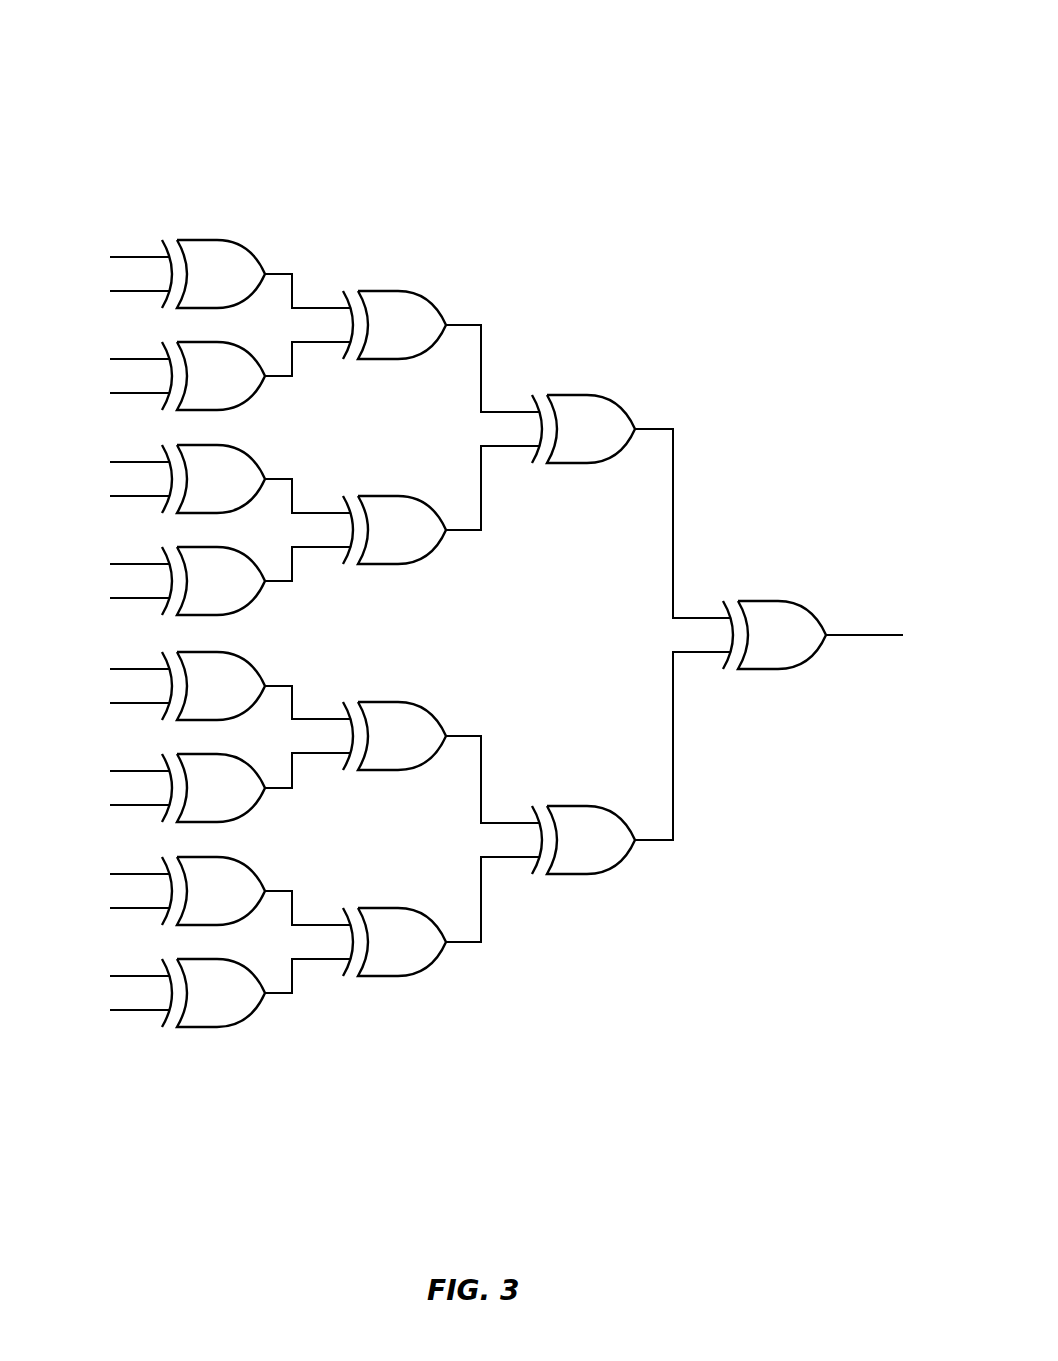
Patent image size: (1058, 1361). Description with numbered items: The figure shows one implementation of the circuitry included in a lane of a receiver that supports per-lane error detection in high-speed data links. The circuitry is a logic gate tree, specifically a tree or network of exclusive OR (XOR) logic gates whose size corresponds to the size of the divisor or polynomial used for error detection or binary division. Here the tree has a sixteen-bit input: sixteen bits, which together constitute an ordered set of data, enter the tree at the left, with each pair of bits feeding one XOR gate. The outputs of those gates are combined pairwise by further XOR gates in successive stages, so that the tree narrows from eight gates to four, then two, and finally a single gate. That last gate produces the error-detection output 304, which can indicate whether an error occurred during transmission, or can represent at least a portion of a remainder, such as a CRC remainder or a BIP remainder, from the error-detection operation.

The error-detection output 304 is at (893, 634).